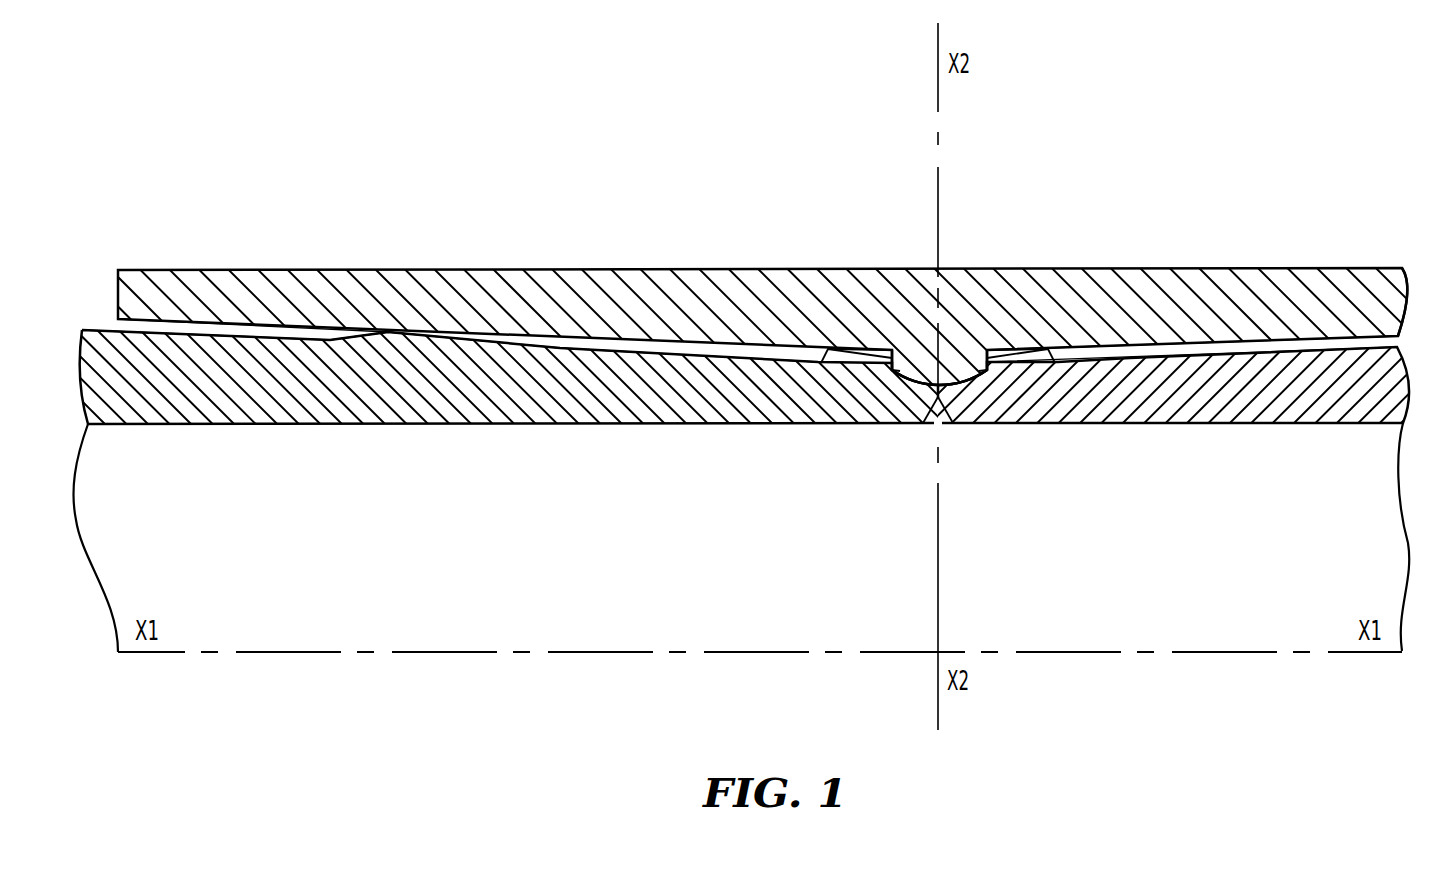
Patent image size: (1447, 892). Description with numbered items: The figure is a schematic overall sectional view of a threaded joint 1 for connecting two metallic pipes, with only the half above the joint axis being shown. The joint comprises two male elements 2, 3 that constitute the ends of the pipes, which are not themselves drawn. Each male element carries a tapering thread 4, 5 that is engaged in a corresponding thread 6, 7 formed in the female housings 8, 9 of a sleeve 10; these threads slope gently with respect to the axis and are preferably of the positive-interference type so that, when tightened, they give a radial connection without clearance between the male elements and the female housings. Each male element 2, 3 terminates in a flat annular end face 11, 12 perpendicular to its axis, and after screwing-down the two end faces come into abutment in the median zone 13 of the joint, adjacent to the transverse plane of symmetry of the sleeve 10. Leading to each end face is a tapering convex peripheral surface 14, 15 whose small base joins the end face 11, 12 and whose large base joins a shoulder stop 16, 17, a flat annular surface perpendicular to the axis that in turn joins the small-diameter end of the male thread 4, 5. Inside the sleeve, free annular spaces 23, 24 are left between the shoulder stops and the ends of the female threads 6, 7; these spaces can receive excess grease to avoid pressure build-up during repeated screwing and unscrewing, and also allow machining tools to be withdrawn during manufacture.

The threaded joint 1 is at (1090, 106).
The male element 2 is at (353, 425).
The male element 3 is at (1368, 424).
The tapering thread 4 is at (827, 361).
The tapering thread 5 is at (1049, 361).
The thread 6 is at (221, 334).
The thread 7 is at (1217, 349).
The female housing 8 is at (472, 335).
The female housing 9 is at (1347, 333).
The sleeve 10 is at (601, 270).
The annular end face 11 is at (948, 405).
The annular end face 12 is at (927, 413).
The median zone 13 is at (867, 447).
The peripheral surface 14 is at (902, 377).
The peripheral surface 15 is at (973, 377).
The shoulder stop 16 is at (892, 358).
The shoulder stop 17 is at (982, 358).
The free annular space 23 is at (879, 357).
The free annular space 24 is at (1000, 358).